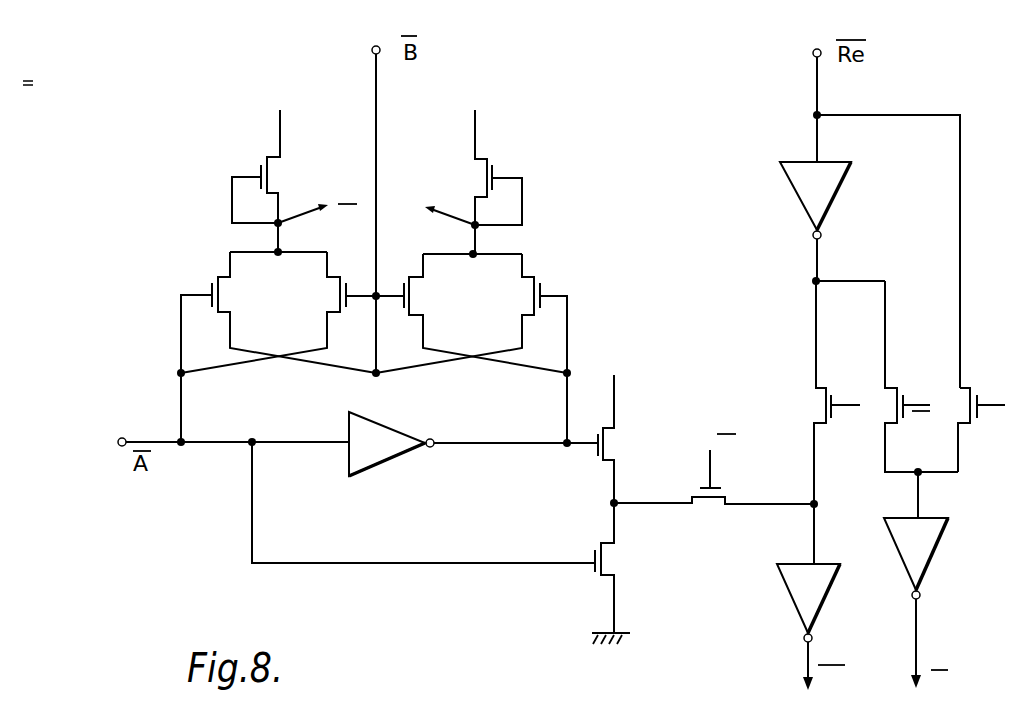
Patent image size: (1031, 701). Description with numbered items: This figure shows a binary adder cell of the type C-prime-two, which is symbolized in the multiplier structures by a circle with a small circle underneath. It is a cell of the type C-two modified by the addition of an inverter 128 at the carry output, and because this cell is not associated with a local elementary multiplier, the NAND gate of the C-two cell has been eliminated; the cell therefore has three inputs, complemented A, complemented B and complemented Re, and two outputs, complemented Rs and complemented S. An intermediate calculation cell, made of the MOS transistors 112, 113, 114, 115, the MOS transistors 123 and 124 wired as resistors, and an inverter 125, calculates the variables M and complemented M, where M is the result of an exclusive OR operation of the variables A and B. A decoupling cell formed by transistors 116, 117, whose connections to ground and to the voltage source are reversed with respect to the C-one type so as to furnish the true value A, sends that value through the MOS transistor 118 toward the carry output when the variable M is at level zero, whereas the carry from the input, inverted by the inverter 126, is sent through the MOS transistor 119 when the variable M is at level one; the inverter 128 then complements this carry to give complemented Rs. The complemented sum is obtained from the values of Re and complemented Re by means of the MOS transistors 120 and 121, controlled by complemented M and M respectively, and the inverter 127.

The MOS transistor 112 is at (226, 281).
The MOS transistor 113 is at (332, 281).
The MOS transistor 114 is at (417, 281).
The MOS transistor 115 is at (526, 281).
The decoupling cell transistor 116 is at (606, 437).
The decoupling cell transistor 117 is at (606, 552).
The MOS transistor 118 is at (706, 497).
The MOS transistor 119 is at (824, 410).
The MOS transistor 120 is at (887, 388).
The MOS transistor 121 is at (960, 388).
The MOS transistor wired as a resistor 123 is at (271, 172).
The MOS transistor wired as a resistor 124 is at (483, 170).
The inverter 125 is at (386, 465).
The inverter 126 is at (842, 180).
The inverter 127 is at (942, 538).
The inverter 128 is at (826, 591).